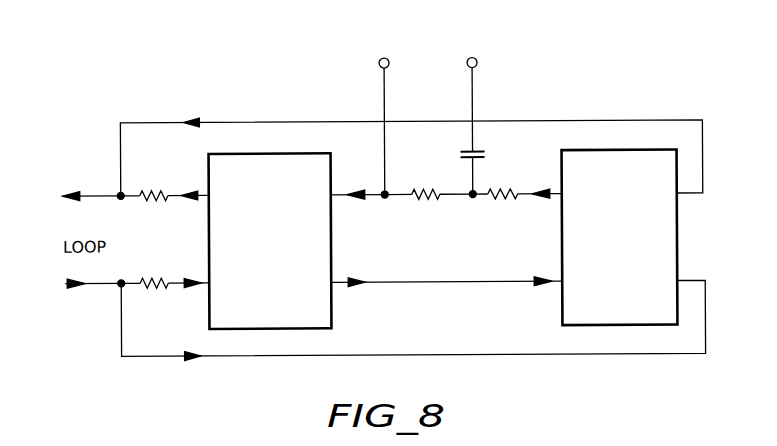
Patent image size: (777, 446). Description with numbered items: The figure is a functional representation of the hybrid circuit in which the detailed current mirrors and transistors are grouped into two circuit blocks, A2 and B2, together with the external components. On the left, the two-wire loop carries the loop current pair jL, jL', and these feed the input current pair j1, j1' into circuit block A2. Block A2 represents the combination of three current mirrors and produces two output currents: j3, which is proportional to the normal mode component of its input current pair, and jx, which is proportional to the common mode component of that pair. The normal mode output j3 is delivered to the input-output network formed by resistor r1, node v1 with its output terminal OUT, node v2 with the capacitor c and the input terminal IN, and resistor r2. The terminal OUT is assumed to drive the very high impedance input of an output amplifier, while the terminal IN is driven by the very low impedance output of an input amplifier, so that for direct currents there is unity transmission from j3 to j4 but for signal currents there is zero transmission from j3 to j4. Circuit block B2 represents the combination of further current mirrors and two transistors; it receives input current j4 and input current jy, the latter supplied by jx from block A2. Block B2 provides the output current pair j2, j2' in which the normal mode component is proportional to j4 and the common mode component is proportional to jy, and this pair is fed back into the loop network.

The output current j2 is at (411, 145).
The loop current jL is at (94, 187).
The input current j1 is at (189, 187).
The circuit block A2 is at (270, 241).
The output current j3 is at (358, 208).
The node voltage v1 is at (390, 209).
The output terminal OUT is at (379, 115).
The resistor r1 is at (429, 184).
The node voltage v2 is at (477, 208).
The capacitor c is at (478, 130).
The input terminal IN is at (468, 51).
The resistor r2 is at (517, 183).
The input current j4 is at (541, 207).
The circuit block B2 is at (620, 237).
The output current jx is at (446, 296).
The input current jy is at (543, 293).
The output current j2' is at (413, 333).
The loop current jL' is at (95, 299).
The input current j1' is at (193, 297).